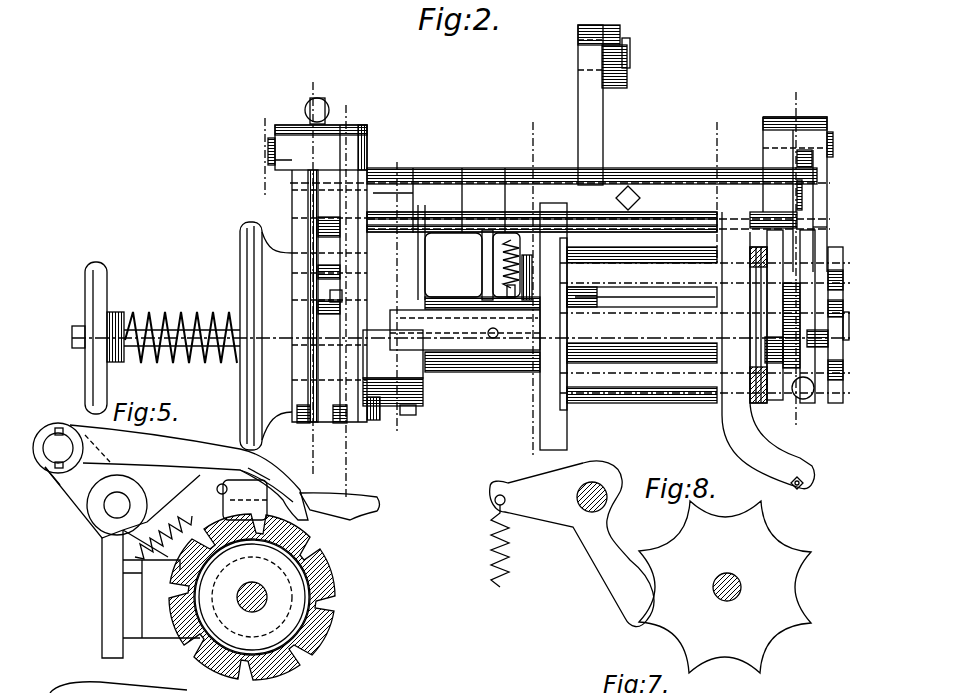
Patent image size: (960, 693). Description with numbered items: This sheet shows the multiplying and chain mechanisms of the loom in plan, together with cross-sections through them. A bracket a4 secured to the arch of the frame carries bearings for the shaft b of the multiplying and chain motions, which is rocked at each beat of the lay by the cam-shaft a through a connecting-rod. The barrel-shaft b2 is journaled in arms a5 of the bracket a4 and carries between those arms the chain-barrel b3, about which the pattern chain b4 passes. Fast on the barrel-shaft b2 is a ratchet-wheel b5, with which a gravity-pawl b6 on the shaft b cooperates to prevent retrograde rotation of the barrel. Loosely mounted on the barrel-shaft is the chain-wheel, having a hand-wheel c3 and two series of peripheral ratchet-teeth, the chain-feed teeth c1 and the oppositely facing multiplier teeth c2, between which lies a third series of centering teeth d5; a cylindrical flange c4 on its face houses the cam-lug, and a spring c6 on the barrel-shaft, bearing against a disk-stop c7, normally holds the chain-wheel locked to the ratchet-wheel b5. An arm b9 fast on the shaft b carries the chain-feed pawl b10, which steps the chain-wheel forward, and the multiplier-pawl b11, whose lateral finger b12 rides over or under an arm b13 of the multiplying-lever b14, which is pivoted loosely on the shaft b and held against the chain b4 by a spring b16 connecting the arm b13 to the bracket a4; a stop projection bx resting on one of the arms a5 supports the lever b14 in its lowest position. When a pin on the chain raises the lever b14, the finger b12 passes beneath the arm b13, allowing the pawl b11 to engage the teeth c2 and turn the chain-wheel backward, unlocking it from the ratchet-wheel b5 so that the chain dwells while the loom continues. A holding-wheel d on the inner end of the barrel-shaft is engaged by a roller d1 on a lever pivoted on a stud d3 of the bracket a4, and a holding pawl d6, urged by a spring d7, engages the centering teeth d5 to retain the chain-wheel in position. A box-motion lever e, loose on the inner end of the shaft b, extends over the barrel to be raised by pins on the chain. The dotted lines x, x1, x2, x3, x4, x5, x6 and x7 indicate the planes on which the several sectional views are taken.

In FIG. 2, the section line x x is at (448, 398).
In FIG. 2, the section line x' x' x1 is at (345, 291).
In FIG. 2, the section line x2 x2 is at (267, 144).
In FIG. 2, the section line x3 x3 is at (536, 289).
In FIG. 2, the section line x4 x4 is at (398, 295).
In FIG. 2, the section line x5 x5 is at (314, 267).
In FIG. 2, the section line x6 x6 is at (796, 257).
In FIG. 2, the section line x7 x7 is at (717, 181).
In FIG. 2, the cam-shaft a is at (823, 227).
In FIG. 2, the bracket a4 is at (810, 397).
In FIG. 5, the bracket a4 is at (91, 594).
In FIG. 2, the arms of the bracket a5 is at (490, 265).
In FIG. 5, the arms of the bracket a5 is at (161, 599).
In FIG. 8, the arms of the bracket a5 is at (725, 587).
In FIG. 5, the shaft b is at (115, 497).
In FIG. 8, the shaft b is at (603, 487).
In FIG. 2, the barrel-shaft b2 is at (152, 318).
In FIG. 5, the barrel-shaft b2 is at (262, 600).
In FIG. 2, the chain-barrel b3 is at (540, 420).
In FIG. 2, the chain b4 is at (663, 383).
In FIG. 2, the ratchet-wheel b5 is at (415, 412).
In FIG. 2, the gravity-pawl b6 is at (427, 268).
In FIG. 2, the arm b9 is at (330, 150).
In FIG. 5, the arm b9 is at (67, 492).
In FIG. 2, the chain-feed pawl b10 is at (350, 190).
In FIG. 2, the multiplier-pawl b11 is at (300, 282).
In FIG. 2, the finger b12 is at (368, 348).
In FIG. 5, the finger b12 is at (262, 473).
In FIG. 2, the arm of multiplying-lever b13 is at (465, 330).
In FIG. 5, the arm of multiplying-lever b13 is at (220, 483).
In FIG. 2, the multiplying-lever b14 is at (567, 332).
In FIG. 5, the multiplying-lever b14 is at (352, 512).
In FIG. 2, the spring b16 is at (507, 247).
In FIG. 5, the spring b16 is at (120, 548).
In FIG. 5, the stop projection bx is at (293, 502).
In FIG. 2, the chain-feed ratchet-teeth c1 is at (340, 424).
In FIG. 2, the multiplier ratchet-teeth c2 is at (298, 424).
In FIG. 5, the multiplier ratchet-teeth c2 is at (326, 600).
In FIG. 2, the hand-wheel c3 is at (243, 236).
In FIG. 2, the cylindrical flange c4 is at (382, 420).
In FIG. 2, the spring c6 is at (163, 358).
In FIG. 2, the disk-stop c7 is at (105, 290).
In FIG. 2, the holding-wheel d is at (836, 405).
In FIG. 2, the roller d1 is at (840, 313).
In FIG. 2, the stud d3 is at (833, 132).
In FIG. 2, the centering teeth d5 is at (337, 302).
In FIG. 8, the holding pawl d6 is at (610, 573).
In FIG. 8, the spring d7 is at (494, 586).
In FIG. 2, the box-motion lever e is at (768, 350).